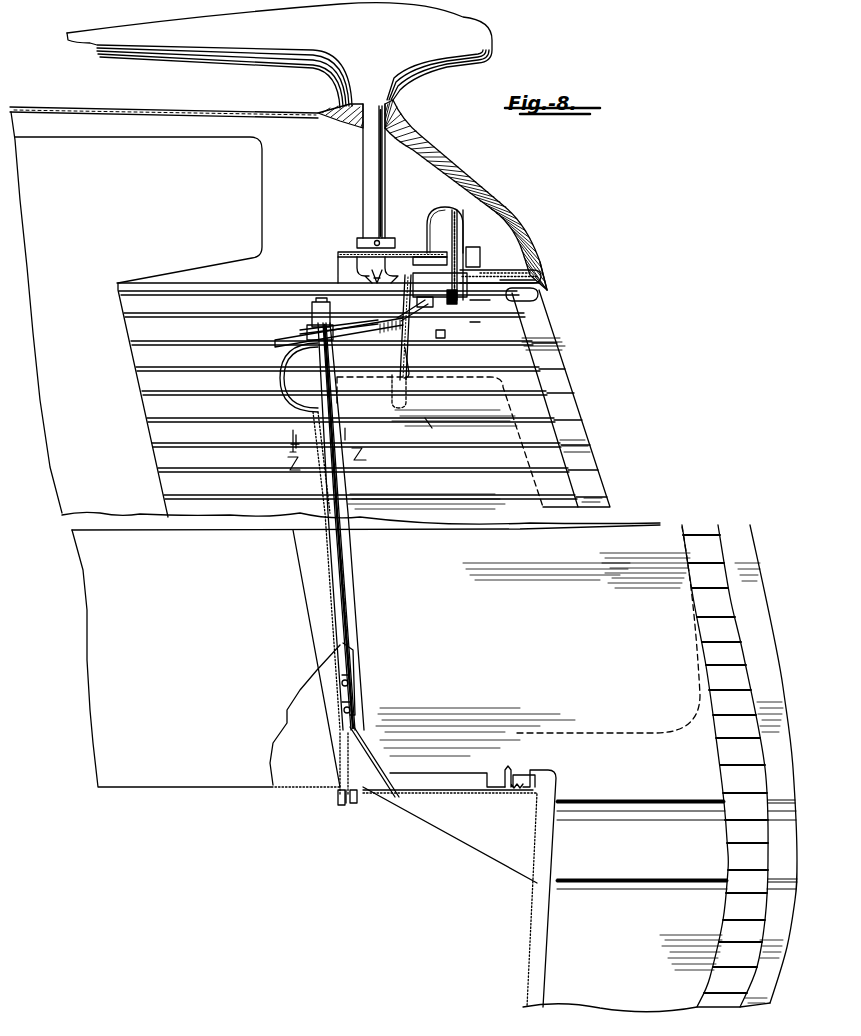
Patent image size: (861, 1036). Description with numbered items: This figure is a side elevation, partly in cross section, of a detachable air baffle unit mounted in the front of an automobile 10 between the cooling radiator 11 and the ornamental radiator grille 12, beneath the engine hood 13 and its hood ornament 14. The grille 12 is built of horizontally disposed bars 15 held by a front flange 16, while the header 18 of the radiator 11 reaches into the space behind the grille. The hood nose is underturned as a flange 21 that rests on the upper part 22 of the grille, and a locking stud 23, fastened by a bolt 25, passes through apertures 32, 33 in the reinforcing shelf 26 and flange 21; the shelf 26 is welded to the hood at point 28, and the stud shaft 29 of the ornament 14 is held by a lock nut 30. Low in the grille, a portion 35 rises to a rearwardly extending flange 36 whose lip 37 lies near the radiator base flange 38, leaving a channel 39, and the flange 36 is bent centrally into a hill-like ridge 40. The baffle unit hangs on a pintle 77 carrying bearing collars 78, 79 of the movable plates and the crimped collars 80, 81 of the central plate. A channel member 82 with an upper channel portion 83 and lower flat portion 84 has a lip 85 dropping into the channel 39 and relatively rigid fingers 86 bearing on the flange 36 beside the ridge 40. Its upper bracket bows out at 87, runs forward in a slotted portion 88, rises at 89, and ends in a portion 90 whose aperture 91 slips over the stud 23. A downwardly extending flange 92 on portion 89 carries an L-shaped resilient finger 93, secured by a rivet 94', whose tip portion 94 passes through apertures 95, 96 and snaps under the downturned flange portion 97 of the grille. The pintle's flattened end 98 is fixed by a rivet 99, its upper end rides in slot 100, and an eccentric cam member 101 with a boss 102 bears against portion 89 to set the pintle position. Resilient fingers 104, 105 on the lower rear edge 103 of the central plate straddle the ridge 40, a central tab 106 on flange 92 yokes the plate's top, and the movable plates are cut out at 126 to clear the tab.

The automobile 10 is at (533, 214).
The cooling radiator 11 is at (93, 577).
The ornamental radiator grille 12 is at (543, 351).
The engine hood 13 is at (150, 92).
The hood ornament 14 is at (455, 38).
The horizontally disposed bars 15 is at (146, 393).
The front flange 16 is at (578, 448).
The header 18 is at (228, 183).
The underturned flange 21 is at (522, 276).
The upper part of grille 22 is at (541, 295).
The locking stud 23 is at (442, 220).
The bolt 25 is at (489, 304).
The flange or shelf 26 is at (486, 245).
The welding point 28 is at (483, 187).
The stud shaft 29 is at (370, 173).
The lock nut 30 is at (370, 248).
The aperture in shelf 32 is at (467, 253).
The aperture in underturned flange 33 is at (478, 276).
The upwardly extending portion of grille 35 is at (528, 930).
The rearwardly extending flange 36 is at (437, 842).
The lip 37 is at (356, 798).
The base flange of radiator 38 is at (340, 795).
The channel 39 is at (344, 800).
The hill-like ridge 40 is at (460, 795).
The pintle 77 is at (288, 382).
The bearing collar 78 is at (348, 468).
The bearing collar 79 is at (345, 420).
The collar 80 is at (350, 386).
The collar 81 is at (361, 603).
The channel member 82 is at (310, 482).
The upper channel portion 83 is at (293, 436).
The lower flat portion 84 is at (340, 648).
The downwardly extending lip 85 is at (337, 763).
The relatively rigid fingers 86 is at (374, 762).
The bowed-out portion 87 is at (278, 357).
The intermediate slotted portion 88 is at (395, 349).
The upwardly extending portion 89 is at (397, 317).
The end portion 90 is at (508, 270).
The aperture 91 is at (423, 263).
The downwardly extending flange 92 is at (446, 334).
The L-shaped resilient finger 93 is at (489, 326).
The tip portion 94 is at (430, 307).
The rivet 94' is at (432, 360).
The aperture in flange 95 is at (464, 303).
The aperture in upwardly extending portion 96 is at (397, 293).
The downwardly turned flange portion 97 is at (440, 278).
The flattened lower end of pintle 98 is at (355, 697).
The rivet 99 is at (355, 681).
The slot 100 is at (357, 349).
The eccentrically mounted cam member 101 is at (285, 337).
The boss 102 is at (308, 307).
The lower rear edge of central baffle plate 103 is at (447, 772).
The resilient finger 104 is at (548, 768).
The resilient finger 105 is at (505, 780).
The central tab 106 is at (412, 393).
The cut-out 126 is at (449, 431).